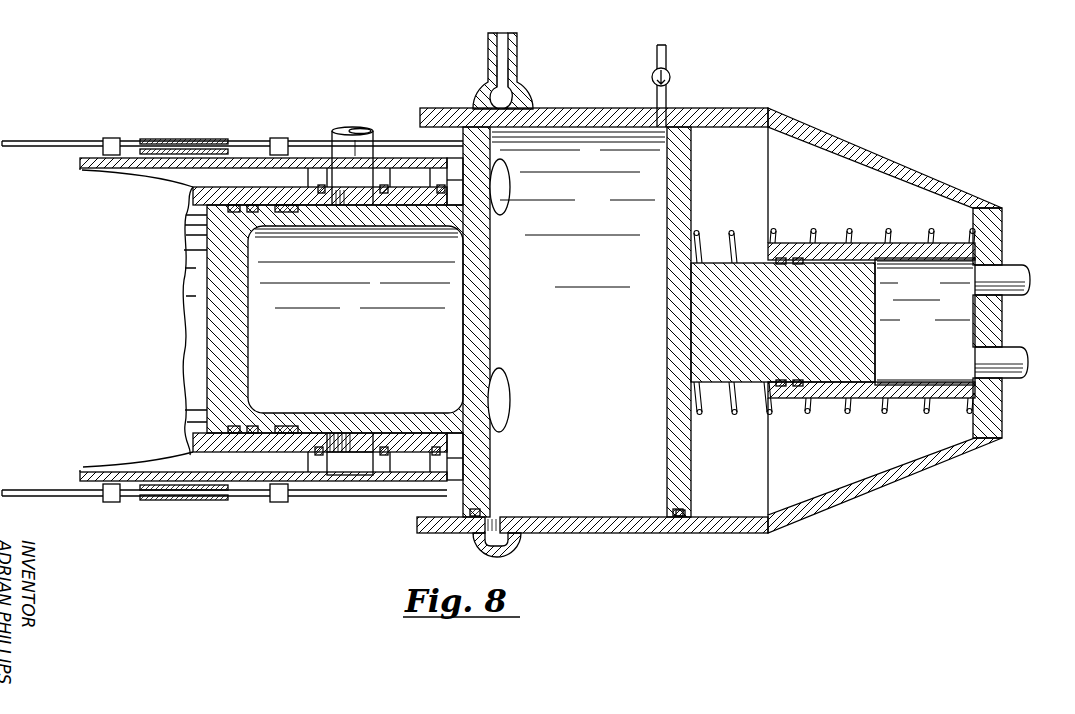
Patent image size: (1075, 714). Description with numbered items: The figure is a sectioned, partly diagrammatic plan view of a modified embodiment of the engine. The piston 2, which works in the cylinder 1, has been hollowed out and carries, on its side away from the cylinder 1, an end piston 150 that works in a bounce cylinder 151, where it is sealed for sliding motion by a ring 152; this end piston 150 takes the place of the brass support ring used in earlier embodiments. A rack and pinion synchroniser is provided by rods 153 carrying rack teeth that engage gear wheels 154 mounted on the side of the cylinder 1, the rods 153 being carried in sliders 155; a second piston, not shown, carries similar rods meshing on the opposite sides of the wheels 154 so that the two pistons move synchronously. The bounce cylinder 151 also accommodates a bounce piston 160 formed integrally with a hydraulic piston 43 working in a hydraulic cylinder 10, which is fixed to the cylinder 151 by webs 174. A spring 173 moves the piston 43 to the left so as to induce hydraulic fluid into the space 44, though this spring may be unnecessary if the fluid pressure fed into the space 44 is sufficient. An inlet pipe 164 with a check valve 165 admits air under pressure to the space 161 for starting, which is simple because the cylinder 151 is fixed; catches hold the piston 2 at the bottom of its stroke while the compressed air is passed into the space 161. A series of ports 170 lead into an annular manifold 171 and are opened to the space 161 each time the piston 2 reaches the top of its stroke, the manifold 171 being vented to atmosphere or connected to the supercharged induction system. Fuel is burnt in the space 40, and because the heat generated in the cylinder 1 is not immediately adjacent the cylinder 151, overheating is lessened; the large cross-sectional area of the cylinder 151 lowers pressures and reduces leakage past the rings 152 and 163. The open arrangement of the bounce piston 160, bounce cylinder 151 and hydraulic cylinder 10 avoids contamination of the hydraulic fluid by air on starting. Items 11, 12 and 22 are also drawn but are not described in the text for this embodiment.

The cylinder 1 is at (262, 455).
The piston 2 is at (212, 268).
The hydraulic cylinder 10 is at (830, 243).
The outlet tube 11 is at (1003, 353).
The inlet tube 12 is at (1005, 270).
The adjusting nut 22 is at (347, 178).
The space 40 is at (197, 328).
The hydraulic piston 43 is at (866, 333).
The space 44 is at (936, 303).
The end piston 150 is at (481, 299).
The bounce cylinder 151 is at (541, 118).
The ring 152 is at (466, 512).
The rods 153 is at (299, 144).
The gear wheels 154 is at (176, 141).
The sliders 155 is at (112, 138).
The bounce piston 160 is at (684, 183).
The space 161 is at (594, 324).
The ring 163 is at (680, 520).
The inlet pipe 164 is at (668, 102).
The check valve 165 is at (670, 76).
The ports 170 is at (503, 179).
The annular manifold 171 is at (508, 97).
The spring 173 is at (845, 235).
The webs 174 is at (874, 160).